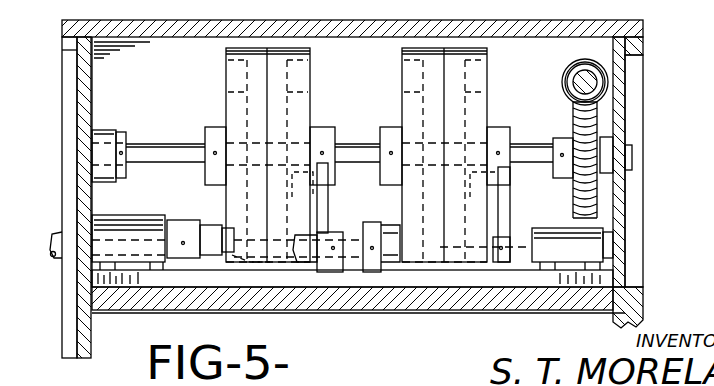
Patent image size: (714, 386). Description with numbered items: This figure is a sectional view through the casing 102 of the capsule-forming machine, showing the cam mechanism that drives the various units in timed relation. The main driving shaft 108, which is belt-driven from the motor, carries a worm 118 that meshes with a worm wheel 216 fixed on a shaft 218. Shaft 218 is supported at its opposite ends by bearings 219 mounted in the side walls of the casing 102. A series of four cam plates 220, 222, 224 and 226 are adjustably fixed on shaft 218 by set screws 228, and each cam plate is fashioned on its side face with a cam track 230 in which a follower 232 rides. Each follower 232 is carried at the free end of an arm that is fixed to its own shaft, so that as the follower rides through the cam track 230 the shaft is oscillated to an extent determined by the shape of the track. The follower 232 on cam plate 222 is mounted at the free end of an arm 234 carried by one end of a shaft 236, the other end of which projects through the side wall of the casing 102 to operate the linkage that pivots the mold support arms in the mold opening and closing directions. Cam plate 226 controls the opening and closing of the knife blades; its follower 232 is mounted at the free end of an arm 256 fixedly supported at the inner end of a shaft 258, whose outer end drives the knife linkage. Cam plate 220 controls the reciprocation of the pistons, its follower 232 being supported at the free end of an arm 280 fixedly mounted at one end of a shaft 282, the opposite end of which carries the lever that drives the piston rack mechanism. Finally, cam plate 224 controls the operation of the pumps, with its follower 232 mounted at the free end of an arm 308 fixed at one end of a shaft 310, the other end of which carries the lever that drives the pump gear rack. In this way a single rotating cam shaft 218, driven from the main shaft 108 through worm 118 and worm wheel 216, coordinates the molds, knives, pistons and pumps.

The casing 102 is at (645, 40).
The main driving shaft 108 is at (600, 80).
The worm gear 118 is at (576, 68).
The worm wheel 216 is at (598, 122).
The shaft 218 is at (548, 134).
The bearings 219 is at (97, 128).
The cam plate 220 is at (487, 68).
The cam plate 222 is at (402, 77).
The cam plate 224 is at (310, 66).
The cam plate 226 is at (228, 55).
The set screws 228 is at (214, 153).
The cam track 230 is at (225, 108).
The follower 232 is at (252, 262).
The arm 234 is at (395, 208).
The shaft 236 is at (372, 255).
The arm 256 is at (204, 222).
The shaft 258 is at (56, 232).
The arm 280 is at (506, 212).
The shaft 282 is at (606, 246).
The arm 308 is at (336, 214).
The shaft 310 is at (305, 262).